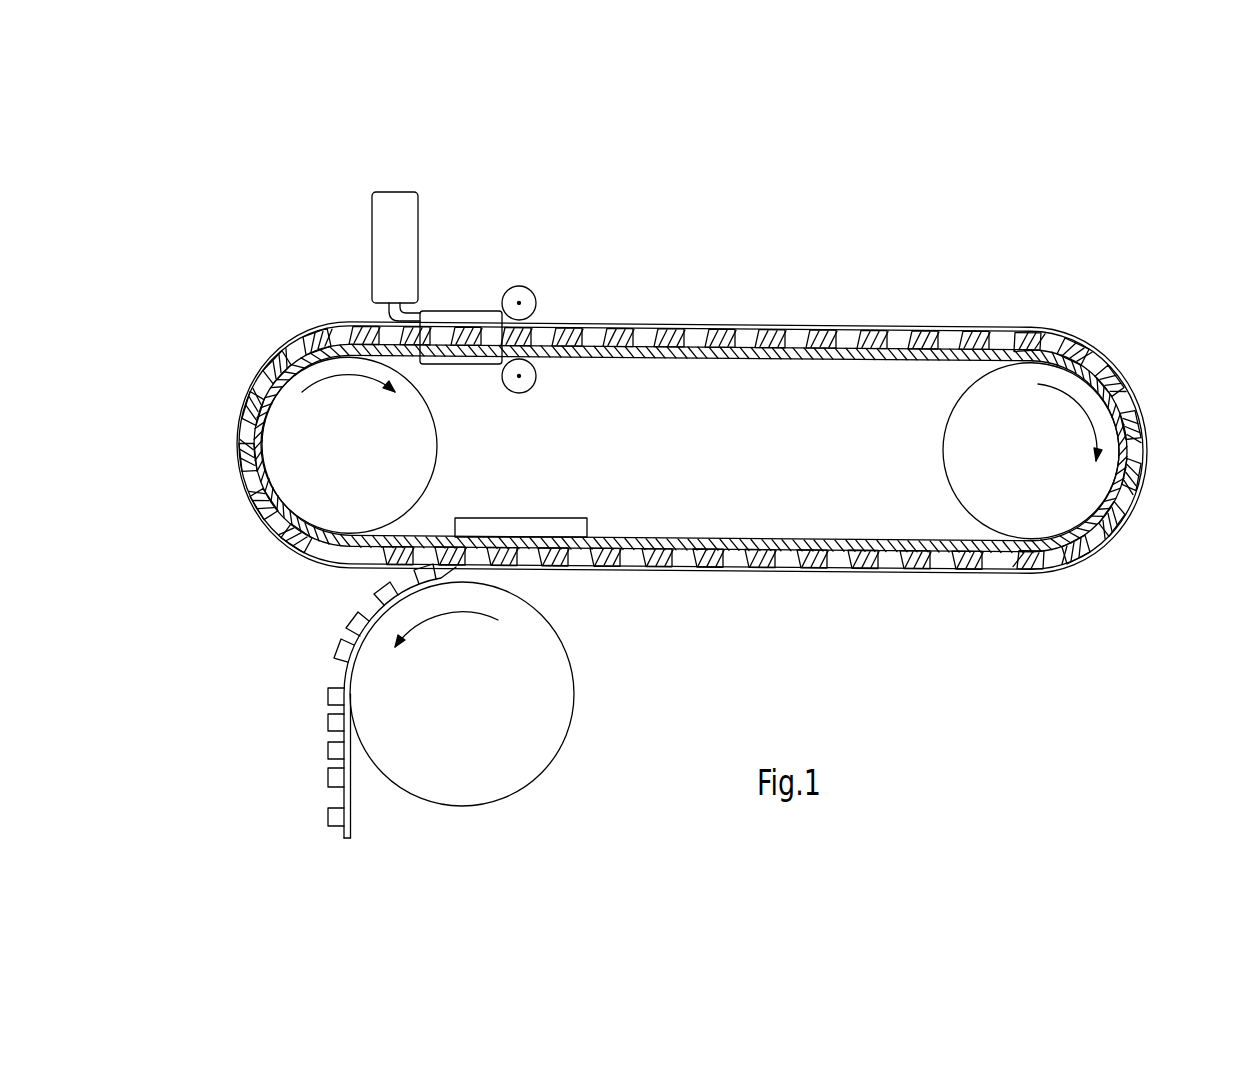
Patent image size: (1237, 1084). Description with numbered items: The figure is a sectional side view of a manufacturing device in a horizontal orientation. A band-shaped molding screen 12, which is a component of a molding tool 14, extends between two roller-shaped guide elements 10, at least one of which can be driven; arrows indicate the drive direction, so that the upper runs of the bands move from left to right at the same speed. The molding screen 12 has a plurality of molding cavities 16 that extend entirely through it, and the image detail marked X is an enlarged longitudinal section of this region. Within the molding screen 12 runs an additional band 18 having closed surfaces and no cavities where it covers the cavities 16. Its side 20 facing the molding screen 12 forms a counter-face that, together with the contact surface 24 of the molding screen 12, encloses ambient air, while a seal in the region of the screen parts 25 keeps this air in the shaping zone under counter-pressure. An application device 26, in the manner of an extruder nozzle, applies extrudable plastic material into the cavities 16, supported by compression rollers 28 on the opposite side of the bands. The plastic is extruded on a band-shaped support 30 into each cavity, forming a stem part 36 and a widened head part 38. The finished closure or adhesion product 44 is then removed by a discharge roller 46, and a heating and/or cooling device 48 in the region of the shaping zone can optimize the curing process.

The roller-shaped guide elements 10 is at (408, 425).
The band-shaped molding screen 12 is at (838, 345).
The molding tool 14 is at (990, 318).
The molding cavities 16 is at (292, 334).
The additional band 18 is at (787, 545).
The counter-face 20 is at (900, 338).
The contact surface 24 is at (572, 338).
The screen parts 25 is at (1122, 530).
The application device 26 is at (410, 232).
The compression rollers 28 is at (522, 290).
The band-shaped support 30 is at (1050, 330).
The stem part 36 is at (340, 823).
The head part 38 is at (334, 650).
The closure or adhesion product 44 is at (337, 778).
The discharge roller 46 is at (543, 670).
The heating and/or cooling device 48 is at (510, 520).
The enlarged longitudinal section X is at (455, 311).